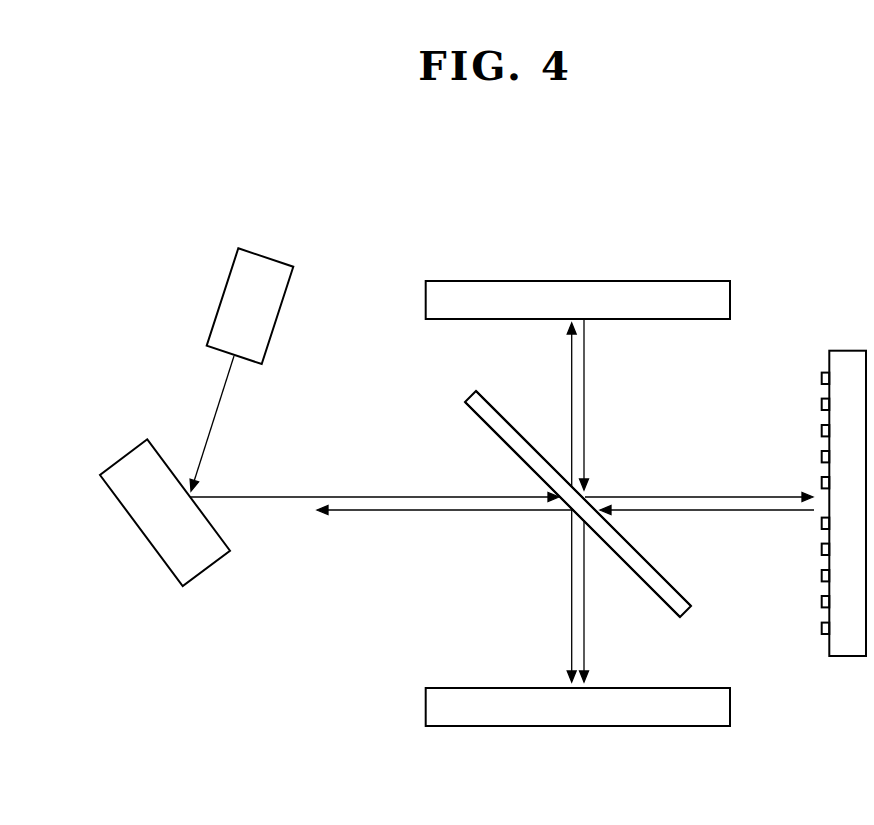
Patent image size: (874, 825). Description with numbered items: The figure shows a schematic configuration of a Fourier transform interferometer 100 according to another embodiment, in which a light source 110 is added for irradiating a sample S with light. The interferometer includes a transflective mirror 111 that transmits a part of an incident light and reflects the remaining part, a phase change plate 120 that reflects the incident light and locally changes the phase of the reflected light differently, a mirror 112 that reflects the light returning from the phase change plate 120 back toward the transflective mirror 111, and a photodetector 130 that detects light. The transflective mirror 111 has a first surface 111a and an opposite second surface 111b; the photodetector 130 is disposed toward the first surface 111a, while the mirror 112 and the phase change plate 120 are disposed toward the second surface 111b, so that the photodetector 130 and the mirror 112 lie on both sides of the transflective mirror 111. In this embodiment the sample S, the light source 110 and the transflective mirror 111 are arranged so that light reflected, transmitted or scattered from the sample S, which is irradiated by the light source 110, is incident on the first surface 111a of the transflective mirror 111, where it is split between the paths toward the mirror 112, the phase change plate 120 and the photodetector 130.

The Fourier transform interferometer 100 is at (427, 208).
The light source 110 is at (259, 250).
The sample S is at (157, 556).
The transflective mirror 111 is at (470, 395).
The first surface 111a is at (503, 440).
The second surface 111b is at (518, 431).
The mirror 112 is at (665, 281).
The phase change plate 120 is at (846, 350).
The photodetector 130 is at (730, 708).